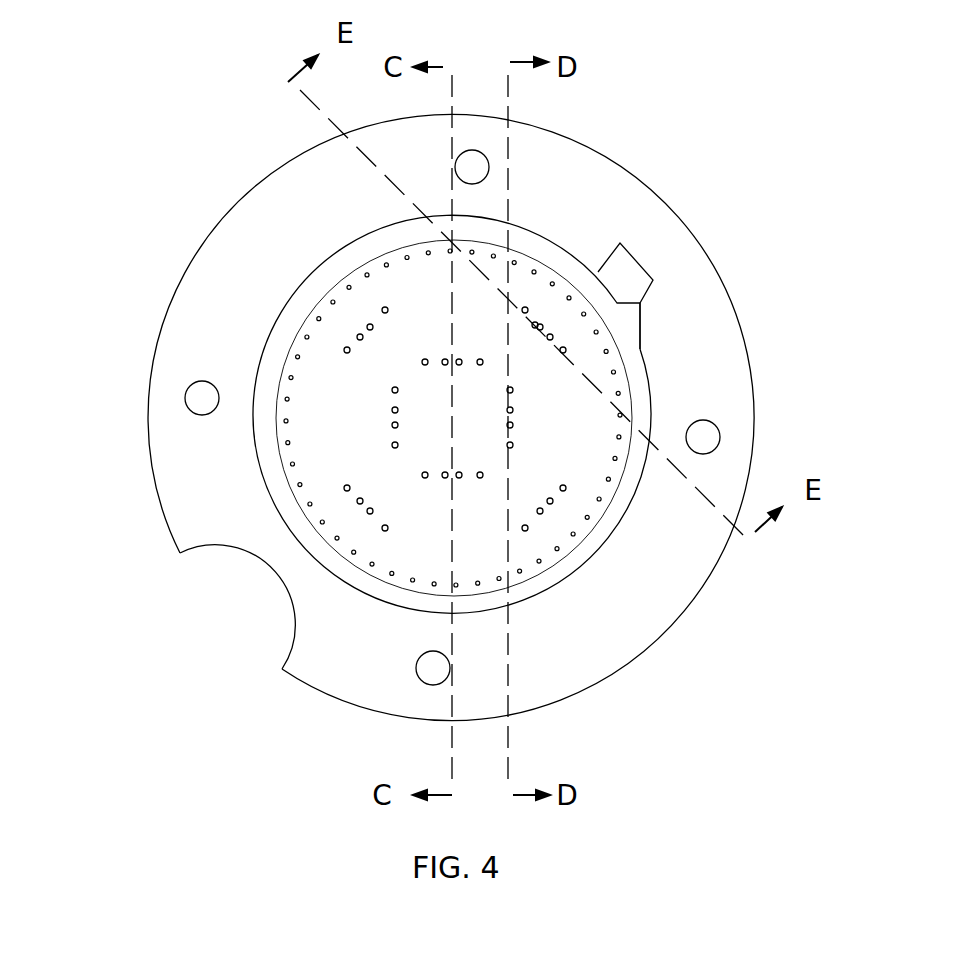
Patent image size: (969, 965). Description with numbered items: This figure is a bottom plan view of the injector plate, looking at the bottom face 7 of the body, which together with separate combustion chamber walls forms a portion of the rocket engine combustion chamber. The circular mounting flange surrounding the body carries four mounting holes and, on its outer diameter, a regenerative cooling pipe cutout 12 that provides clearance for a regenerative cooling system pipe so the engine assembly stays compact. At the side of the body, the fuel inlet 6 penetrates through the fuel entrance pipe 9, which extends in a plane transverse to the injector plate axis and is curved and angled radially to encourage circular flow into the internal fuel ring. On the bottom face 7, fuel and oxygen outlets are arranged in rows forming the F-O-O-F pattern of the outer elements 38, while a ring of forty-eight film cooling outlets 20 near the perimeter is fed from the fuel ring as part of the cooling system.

The fuel inlet 6 is at (635, 253).
The bottom face 7 is at (440, 425).
The fuel entrance pipe 9 is at (633, 313).
The regenerative cooling pipe cutout 12 is at (275, 571).
The outlets 20 is at (287, 395).
The outer elements 38 is at (550, 322).